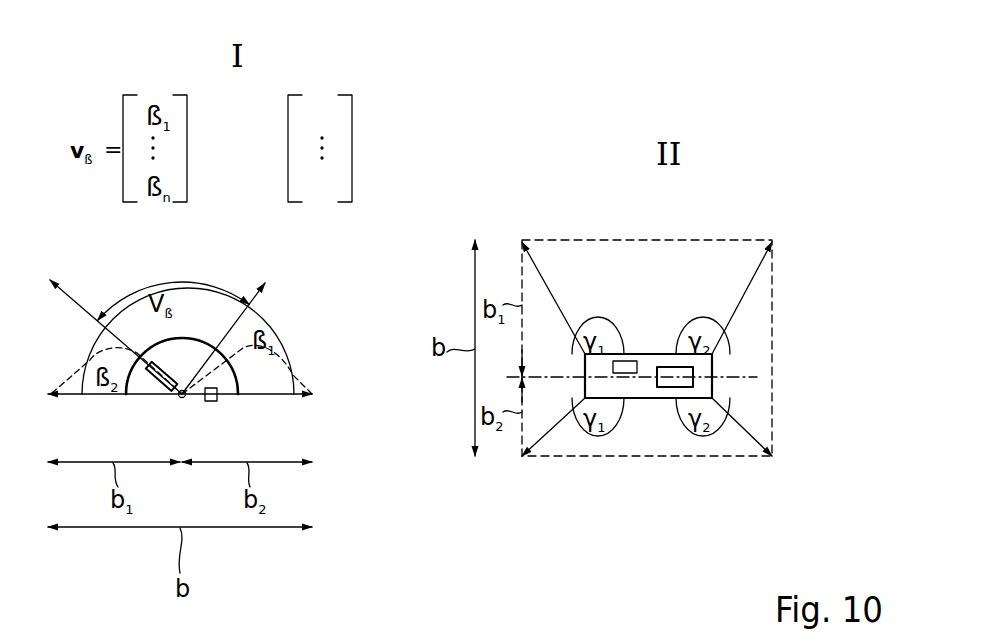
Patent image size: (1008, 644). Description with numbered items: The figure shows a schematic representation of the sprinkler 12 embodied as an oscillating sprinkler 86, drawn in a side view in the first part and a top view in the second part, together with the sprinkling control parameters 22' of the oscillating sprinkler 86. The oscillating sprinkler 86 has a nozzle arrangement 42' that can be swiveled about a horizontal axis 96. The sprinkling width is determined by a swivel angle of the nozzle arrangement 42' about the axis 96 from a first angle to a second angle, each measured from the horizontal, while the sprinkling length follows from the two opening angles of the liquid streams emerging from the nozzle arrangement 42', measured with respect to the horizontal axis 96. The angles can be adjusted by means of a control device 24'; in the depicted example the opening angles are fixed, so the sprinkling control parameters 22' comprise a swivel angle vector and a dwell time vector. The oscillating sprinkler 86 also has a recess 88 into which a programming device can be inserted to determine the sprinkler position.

The sprinkling control parameters 22' is at (250, 224).
The nozzle arrangement 42' is at (392, 294).
The oscillating sprinkler 86 is at (534, 318).
The sprinkler 12 is at (238, 336).
The horizontal axis 96 is at (181, 397).
The control device 24' is at (433, 440).
The recess 88 is at (693, 383).